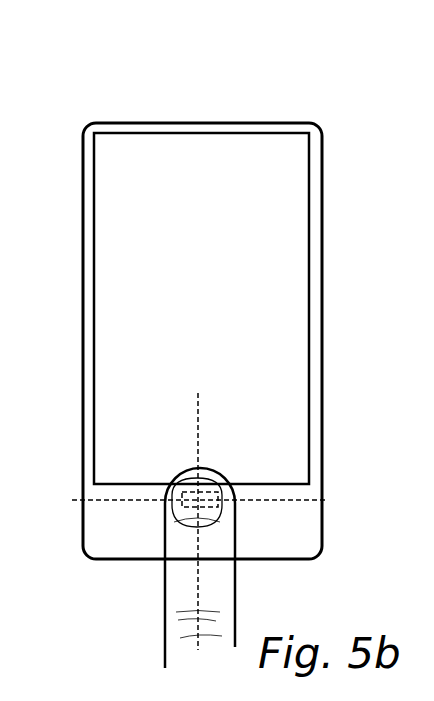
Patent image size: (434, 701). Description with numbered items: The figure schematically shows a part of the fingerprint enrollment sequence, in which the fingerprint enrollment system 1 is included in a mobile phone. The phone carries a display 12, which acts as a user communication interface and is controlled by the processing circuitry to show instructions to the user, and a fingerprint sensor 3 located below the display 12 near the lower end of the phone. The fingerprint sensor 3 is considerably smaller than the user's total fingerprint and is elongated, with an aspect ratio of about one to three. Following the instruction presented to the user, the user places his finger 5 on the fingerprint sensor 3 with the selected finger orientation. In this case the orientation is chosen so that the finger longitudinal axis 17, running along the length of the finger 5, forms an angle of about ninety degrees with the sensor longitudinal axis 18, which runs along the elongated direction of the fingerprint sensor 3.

The fingerprint enrollment system 1 is at (285, 92).
The fingerprint sensor 3 is at (180, 500).
The finger 5 is at (227, 573).
The display 12 is at (218, 367).
The finger longitudinal axis 17 is at (198, 437).
The sensor longitudinal axis 18 is at (309, 501).